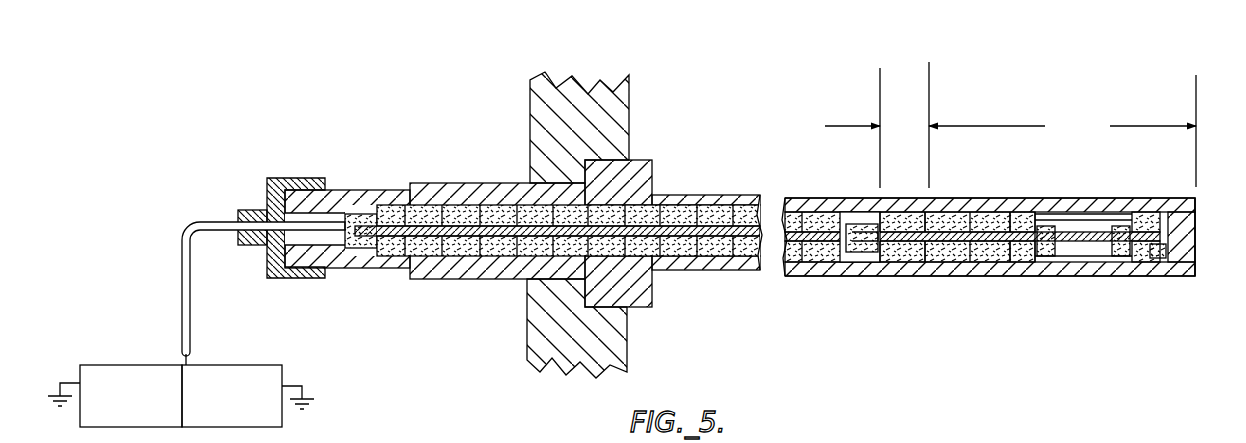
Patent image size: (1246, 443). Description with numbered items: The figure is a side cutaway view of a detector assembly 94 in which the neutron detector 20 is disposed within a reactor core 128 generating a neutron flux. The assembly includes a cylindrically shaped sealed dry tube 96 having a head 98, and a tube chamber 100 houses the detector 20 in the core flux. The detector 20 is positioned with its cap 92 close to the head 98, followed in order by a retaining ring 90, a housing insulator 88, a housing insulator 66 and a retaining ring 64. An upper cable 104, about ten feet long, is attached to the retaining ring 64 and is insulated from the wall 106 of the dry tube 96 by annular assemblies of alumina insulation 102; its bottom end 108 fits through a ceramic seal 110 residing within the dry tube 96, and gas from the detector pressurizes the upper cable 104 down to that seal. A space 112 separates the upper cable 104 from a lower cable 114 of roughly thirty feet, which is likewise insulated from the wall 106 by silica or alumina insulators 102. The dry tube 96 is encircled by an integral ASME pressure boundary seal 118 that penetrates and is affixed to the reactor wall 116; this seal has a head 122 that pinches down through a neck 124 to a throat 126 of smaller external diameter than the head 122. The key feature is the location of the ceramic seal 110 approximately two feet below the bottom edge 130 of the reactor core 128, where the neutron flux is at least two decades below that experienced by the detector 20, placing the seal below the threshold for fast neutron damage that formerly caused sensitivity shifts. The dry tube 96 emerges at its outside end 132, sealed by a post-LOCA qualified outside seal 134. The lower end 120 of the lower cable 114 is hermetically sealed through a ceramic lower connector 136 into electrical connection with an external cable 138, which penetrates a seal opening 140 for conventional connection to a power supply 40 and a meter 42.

The detector 20 is at (1122, 305).
The power supply 40 is at (137, 365).
The meter 42 is at (224, 365).
The retaining ring 64 is at (1045, 226).
The housing insulator 66 is at (1050, 214).
The housing insulator 88 is at (1118, 226).
The retaining ring 90 is at (1135, 214).
The cap 92 is at (1143, 277).
The detector assembly 94 is at (1205, 188).
The dry tube 96 is at (835, 198).
The head 98 is at (1197, 262).
The tube chamber 100 is at (1105, 295).
The alumina insulation 102 is at (712, 257).
The upper cable 104 is at (1013, 277).
The wall 106 is at (950, 262).
The bottom end 108 is at (905, 262).
The ceramic seal 110 is at (843, 262).
The space 112 is at (862, 262).
The lower cable 114 is at (786, 278).
The reactor wall 116 is at (632, 118).
The boundary seal 118 is at (650, 300).
The lower end 120 is at (405, 280).
The head 122 is at (652, 162).
The neck 124 is at (527, 312).
The throat 126 is at (420, 183).
The reactor core 128 is at (1062, 130).
The bottom edge 130 is at (930, 95).
The outside end 132 is at (350, 190).
The outside seal 134 is at (290, 178).
The ceramic lower connector 136 is at (352, 268).
The external cable 138 is at (182, 245).
The seal opening 140 is at (255, 210).